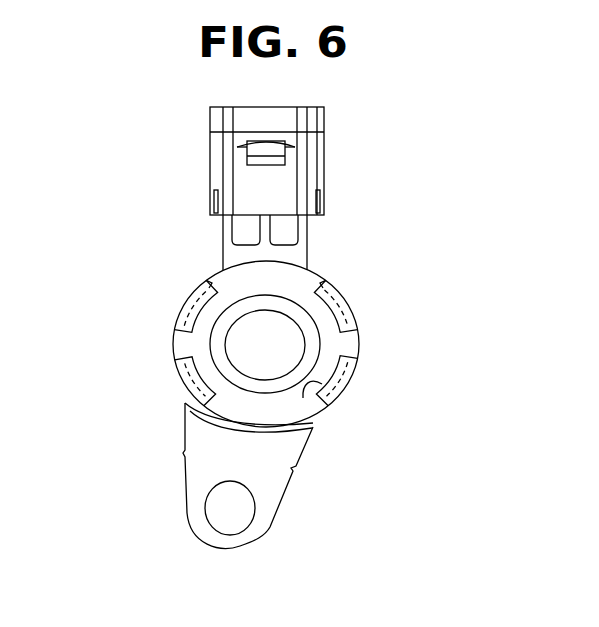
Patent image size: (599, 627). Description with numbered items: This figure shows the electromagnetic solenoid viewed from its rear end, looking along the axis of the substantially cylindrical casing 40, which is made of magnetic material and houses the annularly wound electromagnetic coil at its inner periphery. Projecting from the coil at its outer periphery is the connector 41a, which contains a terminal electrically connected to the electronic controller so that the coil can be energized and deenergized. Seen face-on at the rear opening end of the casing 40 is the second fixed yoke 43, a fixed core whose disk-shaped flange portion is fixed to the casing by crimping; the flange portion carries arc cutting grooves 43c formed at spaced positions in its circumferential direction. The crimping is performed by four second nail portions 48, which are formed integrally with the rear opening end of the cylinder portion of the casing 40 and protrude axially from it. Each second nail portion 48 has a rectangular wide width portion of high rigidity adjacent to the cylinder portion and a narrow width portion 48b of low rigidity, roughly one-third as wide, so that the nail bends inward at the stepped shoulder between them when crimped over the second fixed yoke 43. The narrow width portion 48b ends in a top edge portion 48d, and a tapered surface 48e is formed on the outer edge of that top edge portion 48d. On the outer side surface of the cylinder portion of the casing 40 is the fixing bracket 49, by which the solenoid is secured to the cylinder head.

The casing 40 is at (322, 276).
The connector 41a is at (308, 230).
The second fixed yoke 43 is at (350, 347).
The arc cutting groove 43c is at (308, 385).
The second nail portion 48 is at (274, 345).
The narrow width portion 48b is at (340, 310).
The top edge portion 48d is at (211, 324).
The tapered surface 48e is at (205, 312).
The fixing bracket 49 is at (277, 493).